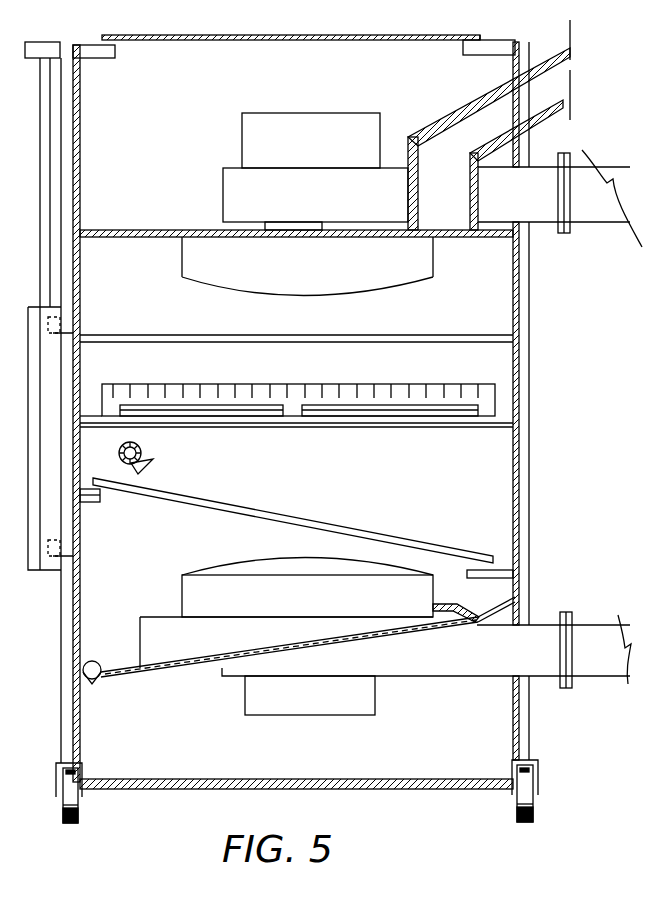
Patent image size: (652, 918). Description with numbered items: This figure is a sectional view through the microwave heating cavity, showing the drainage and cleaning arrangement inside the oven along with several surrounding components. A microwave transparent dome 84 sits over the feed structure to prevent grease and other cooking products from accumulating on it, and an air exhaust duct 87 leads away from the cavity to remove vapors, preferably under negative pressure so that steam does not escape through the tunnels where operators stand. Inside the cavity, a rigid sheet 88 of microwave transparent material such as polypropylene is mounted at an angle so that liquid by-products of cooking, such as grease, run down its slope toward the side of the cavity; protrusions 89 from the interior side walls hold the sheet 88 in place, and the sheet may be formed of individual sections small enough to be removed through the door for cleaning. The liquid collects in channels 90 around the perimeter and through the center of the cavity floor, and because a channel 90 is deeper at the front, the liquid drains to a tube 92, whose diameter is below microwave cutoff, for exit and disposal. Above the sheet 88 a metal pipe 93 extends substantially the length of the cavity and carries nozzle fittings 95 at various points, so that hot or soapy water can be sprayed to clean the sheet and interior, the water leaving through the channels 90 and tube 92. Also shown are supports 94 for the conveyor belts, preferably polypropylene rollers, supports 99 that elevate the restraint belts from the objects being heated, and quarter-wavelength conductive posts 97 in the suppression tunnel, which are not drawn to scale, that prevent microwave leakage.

The microwave transparent dome 84 is at (237, 563).
The air exhaust duct 87 is at (556, 99).
The rigid sheet 88 is at (305, 520).
The protrusions 89 is at (88, 503).
The channels 90 is at (108, 662).
The tube 92 is at (92, 672).
The metal pipe 93 is at (141, 450).
The supports 94 is at (473, 426).
The nozzle fittings 95 is at (147, 468).
The conductive posts 97 is at (371, 390).
The supports 99 is at (413, 333).